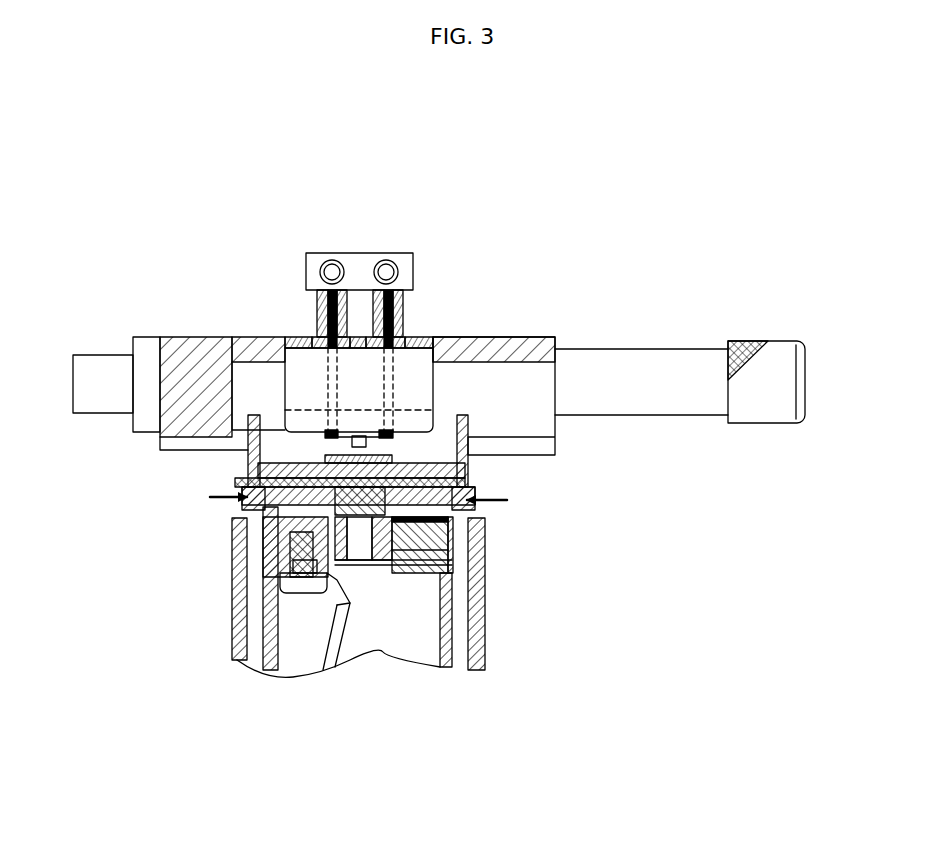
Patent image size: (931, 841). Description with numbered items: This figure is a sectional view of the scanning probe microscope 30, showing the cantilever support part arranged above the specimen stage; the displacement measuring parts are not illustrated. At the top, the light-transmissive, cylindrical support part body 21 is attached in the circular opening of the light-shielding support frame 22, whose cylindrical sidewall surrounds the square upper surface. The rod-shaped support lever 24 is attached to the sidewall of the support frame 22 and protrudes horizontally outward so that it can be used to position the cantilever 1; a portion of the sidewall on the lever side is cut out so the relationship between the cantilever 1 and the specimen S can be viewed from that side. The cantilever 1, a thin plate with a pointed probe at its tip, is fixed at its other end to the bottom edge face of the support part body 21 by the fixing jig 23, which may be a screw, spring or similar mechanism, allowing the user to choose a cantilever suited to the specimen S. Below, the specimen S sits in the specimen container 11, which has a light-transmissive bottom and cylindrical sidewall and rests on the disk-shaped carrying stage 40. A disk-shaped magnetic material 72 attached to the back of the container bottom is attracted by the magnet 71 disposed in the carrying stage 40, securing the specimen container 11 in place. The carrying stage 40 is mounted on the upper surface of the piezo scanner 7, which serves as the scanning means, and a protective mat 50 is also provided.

The scanning probe microscope 30 is at (455, 207).
The support frame 22 is at (148, 352).
The fixing jig 23 is at (357, 245).
The support part body 21 is at (420, 368).
The support lever 24 is at (657, 358).
The cantilever 1 is at (279, 462).
The specimen container 11 is at (472, 453).
The specimen S is at (238, 503).
The protective mat 50 is at (503, 505).
The magnetic material 72 is at (237, 510).
The carrying stage 40 is at (238, 520).
The piezo scanner 7 is at (485, 622).
The magnet 71 is at (363, 573).